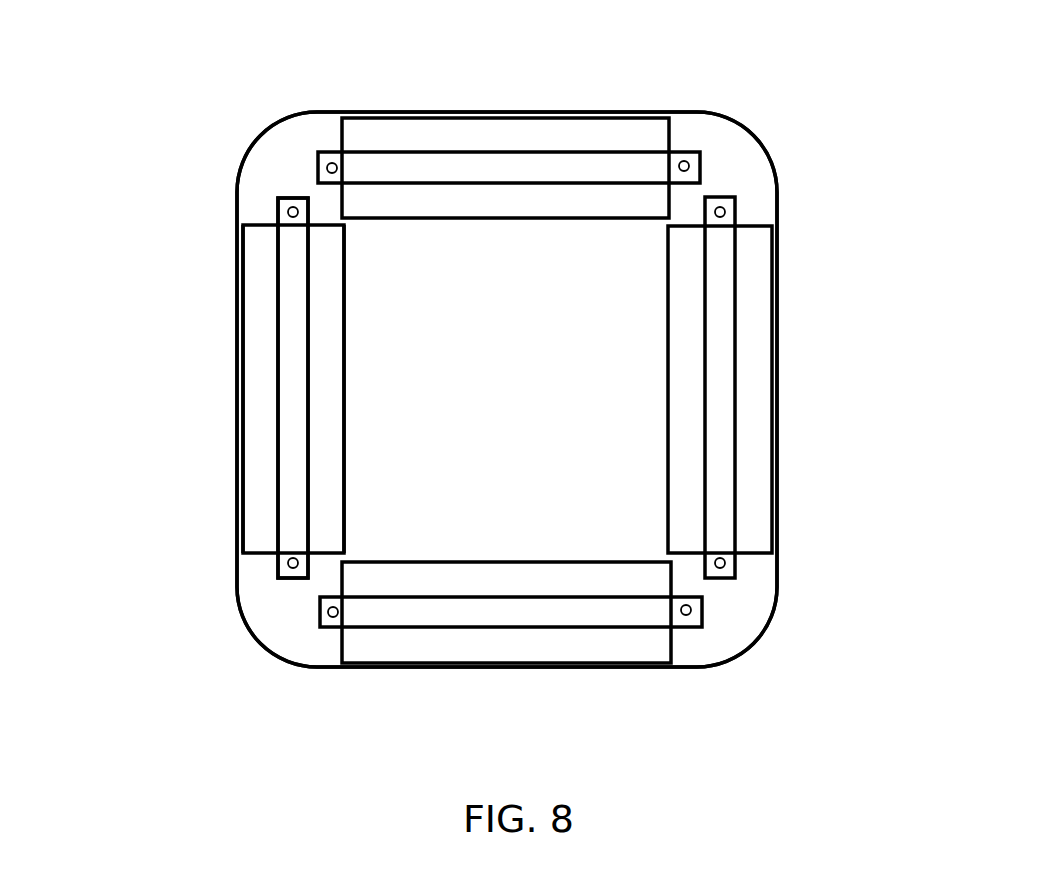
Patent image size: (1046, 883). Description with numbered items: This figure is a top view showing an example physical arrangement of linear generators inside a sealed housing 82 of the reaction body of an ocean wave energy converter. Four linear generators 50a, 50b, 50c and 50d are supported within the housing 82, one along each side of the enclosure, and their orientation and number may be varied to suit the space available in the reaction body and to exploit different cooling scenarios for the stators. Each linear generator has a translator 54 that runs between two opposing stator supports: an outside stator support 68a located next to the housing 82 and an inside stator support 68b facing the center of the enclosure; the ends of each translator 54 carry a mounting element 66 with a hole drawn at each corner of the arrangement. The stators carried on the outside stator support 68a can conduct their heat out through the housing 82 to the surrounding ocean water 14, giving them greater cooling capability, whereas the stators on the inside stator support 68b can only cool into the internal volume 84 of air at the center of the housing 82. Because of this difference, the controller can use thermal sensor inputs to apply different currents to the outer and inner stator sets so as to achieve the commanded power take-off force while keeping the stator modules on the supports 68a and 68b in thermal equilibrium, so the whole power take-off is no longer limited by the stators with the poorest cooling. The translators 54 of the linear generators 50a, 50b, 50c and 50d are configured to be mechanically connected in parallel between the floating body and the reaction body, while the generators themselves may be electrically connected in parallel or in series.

The ocean water 14 is at (93, 147).
The linear generator 50a is at (263, 569).
The linear generator 50b is at (326, 135).
The linear generator 50c is at (764, 209).
The linear generator 50d is at (692, 644).
The translator 54 is at (293, 372).
The fastener tab with hole 66 is at (278, 205).
The outside stator support 68a is at (252, 290).
The inside stator support 68b is at (328, 312).
The housing 82 is at (273, 655).
The internal volume 84 is at (528, 393).